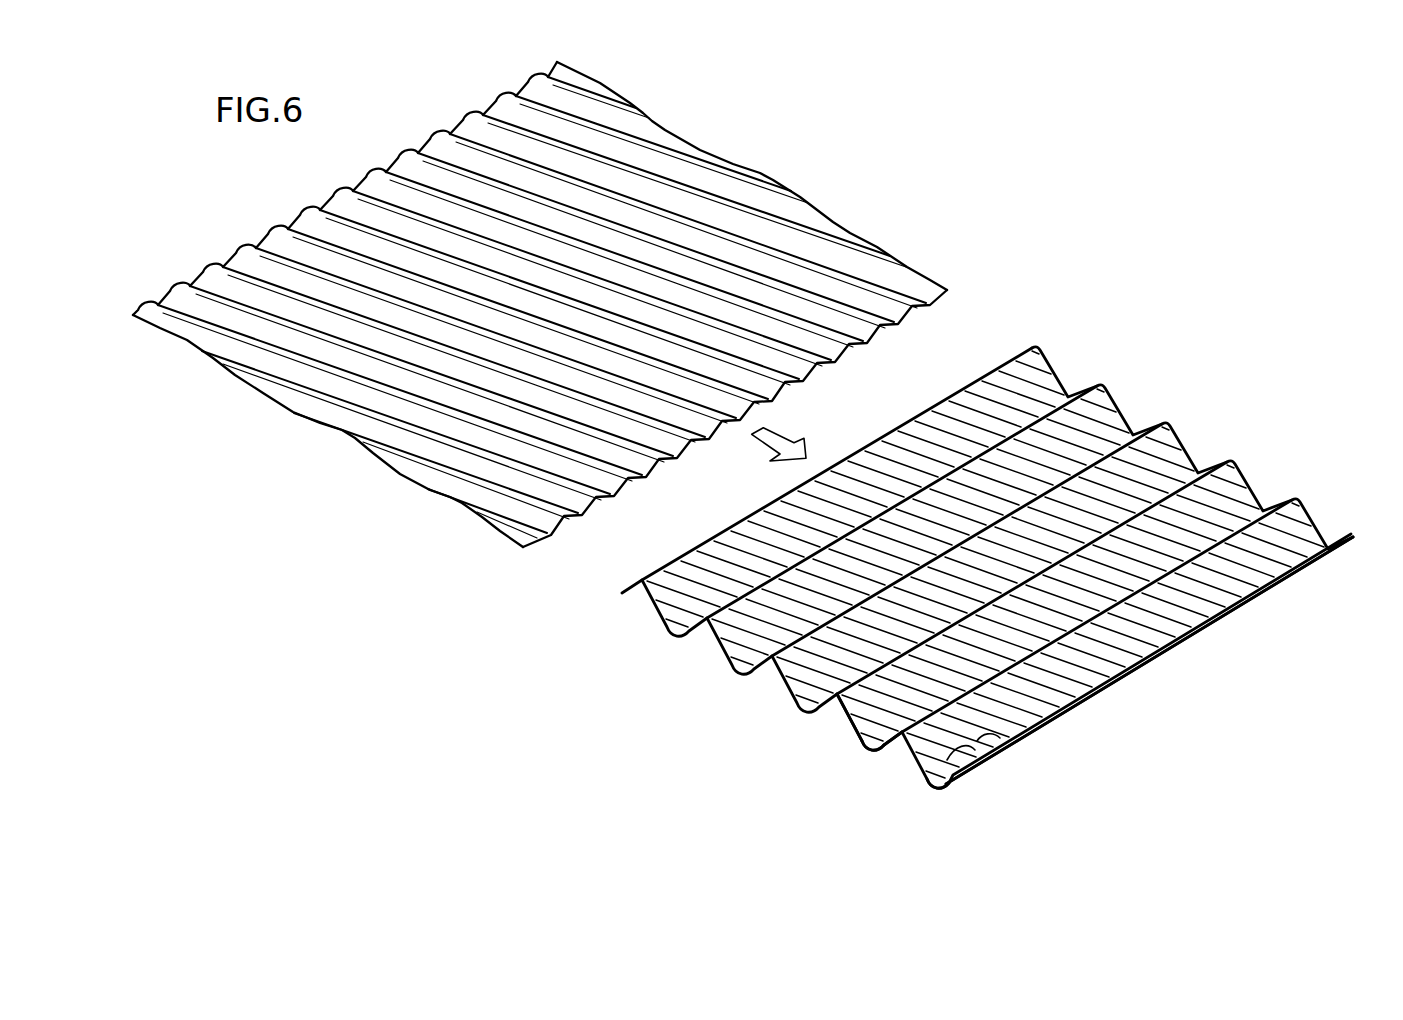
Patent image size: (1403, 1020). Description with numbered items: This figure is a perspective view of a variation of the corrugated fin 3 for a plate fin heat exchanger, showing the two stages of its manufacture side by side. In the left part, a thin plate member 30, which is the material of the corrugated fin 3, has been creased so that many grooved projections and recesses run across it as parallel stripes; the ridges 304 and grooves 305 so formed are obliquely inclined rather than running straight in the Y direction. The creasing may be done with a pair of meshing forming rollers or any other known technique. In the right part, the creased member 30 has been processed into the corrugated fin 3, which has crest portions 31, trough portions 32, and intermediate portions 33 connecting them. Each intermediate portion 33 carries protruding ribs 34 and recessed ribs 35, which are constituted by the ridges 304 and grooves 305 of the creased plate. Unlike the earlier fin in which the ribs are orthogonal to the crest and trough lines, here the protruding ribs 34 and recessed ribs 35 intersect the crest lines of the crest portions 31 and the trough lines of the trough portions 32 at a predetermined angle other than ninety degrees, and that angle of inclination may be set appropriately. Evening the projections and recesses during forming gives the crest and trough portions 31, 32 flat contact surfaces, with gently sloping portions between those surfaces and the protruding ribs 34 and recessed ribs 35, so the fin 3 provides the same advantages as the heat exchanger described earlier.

The thin plate member 30 is at (762, 175).
The ridges 304 is at (565, 520).
The grooves 305 is at (583, 515).
The corrugated fin 3 is at (1113, 402).
The crest portions 31 is at (903, 738).
The trough portions 32 is at (873, 750).
The intermediate portions 33 is at (915, 765).
The protruding ribs 34 is at (997, 748).
The recessed ribs 35 is at (1000, 748).